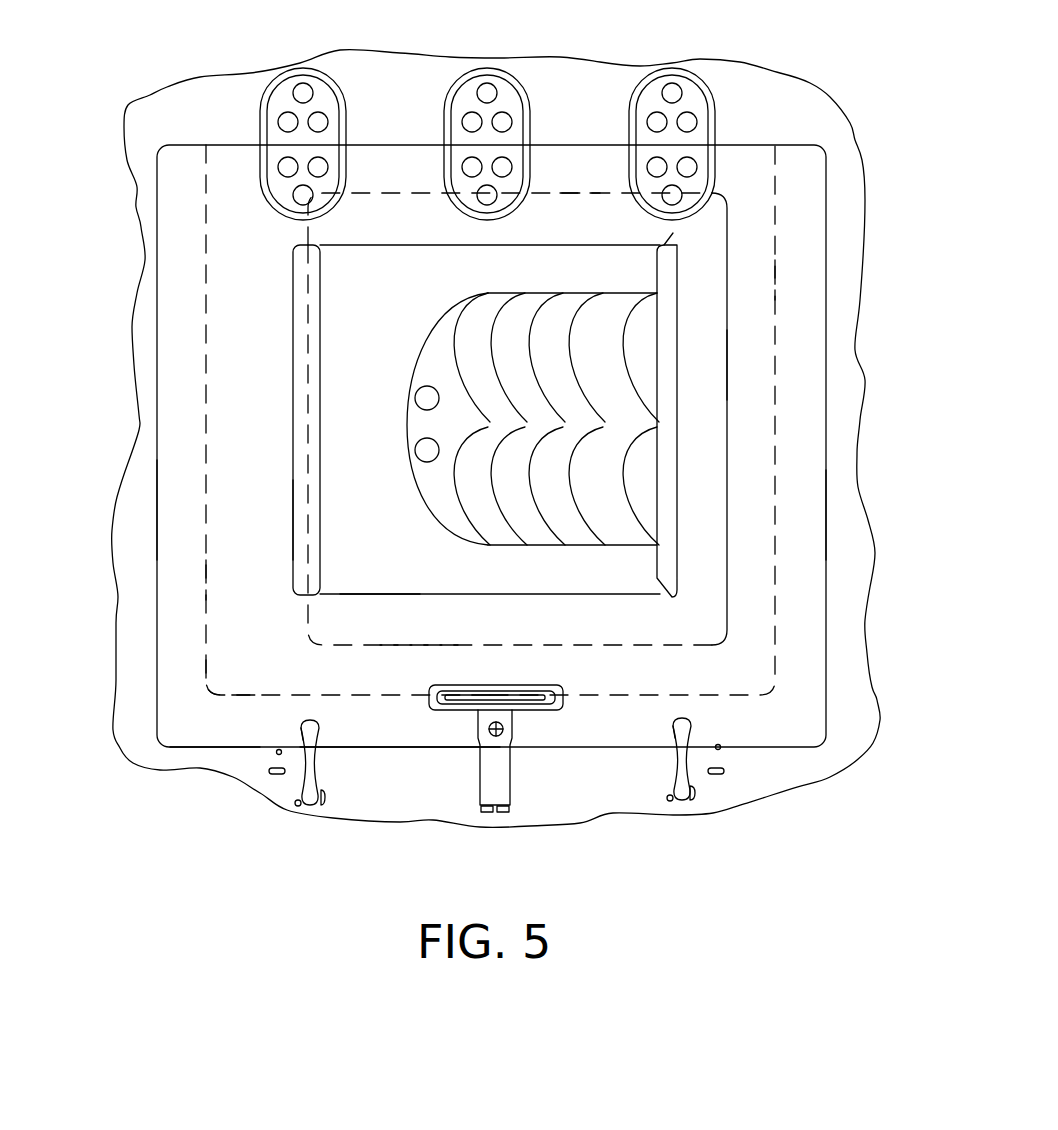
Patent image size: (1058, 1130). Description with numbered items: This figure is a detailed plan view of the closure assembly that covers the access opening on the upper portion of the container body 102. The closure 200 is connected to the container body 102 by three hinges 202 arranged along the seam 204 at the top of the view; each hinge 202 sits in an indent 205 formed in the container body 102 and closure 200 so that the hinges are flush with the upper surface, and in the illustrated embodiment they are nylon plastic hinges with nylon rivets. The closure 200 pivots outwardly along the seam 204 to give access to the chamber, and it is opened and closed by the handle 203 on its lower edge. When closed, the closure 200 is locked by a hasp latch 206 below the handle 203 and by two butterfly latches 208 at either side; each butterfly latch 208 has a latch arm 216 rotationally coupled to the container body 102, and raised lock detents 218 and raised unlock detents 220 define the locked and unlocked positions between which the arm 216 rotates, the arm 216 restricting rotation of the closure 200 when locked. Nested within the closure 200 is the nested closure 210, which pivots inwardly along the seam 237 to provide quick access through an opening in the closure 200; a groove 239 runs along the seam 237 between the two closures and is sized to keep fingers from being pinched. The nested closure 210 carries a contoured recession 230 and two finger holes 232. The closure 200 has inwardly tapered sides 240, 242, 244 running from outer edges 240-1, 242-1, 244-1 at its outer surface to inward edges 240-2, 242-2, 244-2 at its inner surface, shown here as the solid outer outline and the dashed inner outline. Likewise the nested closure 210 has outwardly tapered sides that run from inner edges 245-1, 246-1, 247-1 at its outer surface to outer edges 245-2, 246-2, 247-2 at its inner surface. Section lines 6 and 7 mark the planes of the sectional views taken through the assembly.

The section line 6- 6 is at (672, 8).
The section line 7- 7 is at (899, 428).
The container body 102 is at (845, 170).
The closure 200 is at (780, 138).
The hinges 202 is at (303, 68).
The handle 203 is at (492, 685).
The seam 204 is at (224, 140).
The indent 205 is at (346, 127).
The hasp latch 206 is at (512, 760).
The butterfly latches 208 is at (313, 717).
The nested closure 210 is at (353, 243).
The latch arm 216 is at (319, 742).
The raised lock detents 218 is at (326, 798).
The raised unlock detents 220 is at (279, 748).
The contoured recession 230 is at (616, 362).
The finger holes 232 is at (416, 448).
The seam 237 is at (295, 512).
The groove 239 is at (293, 330).
The inwardly tapered side 240 is at (832, 606).
The outer edge 240-1 is at (826, 513).
The inward edge 240-2 is at (775, 283).
The inwardly tapered side 242 is at (403, 753).
The outer edge 242-1 is at (207, 755).
The inward edge 242-2 is at (230, 694).
The inwardly tapered side 244 is at (178, 265).
The outer edge 244-1 is at (157, 537).
The inward edge 244-2 is at (206, 598).
The inner edge 245-1 is at (508, 245).
The outer edge 245-2 is at (540, 193).
The inner edge 246-1 is at (674, 284).
The outer edge 246-2 is at (727, 375).
The inner edge 247-1 is at (372, 594).
The outer edge 247-2 is at (425, 645).